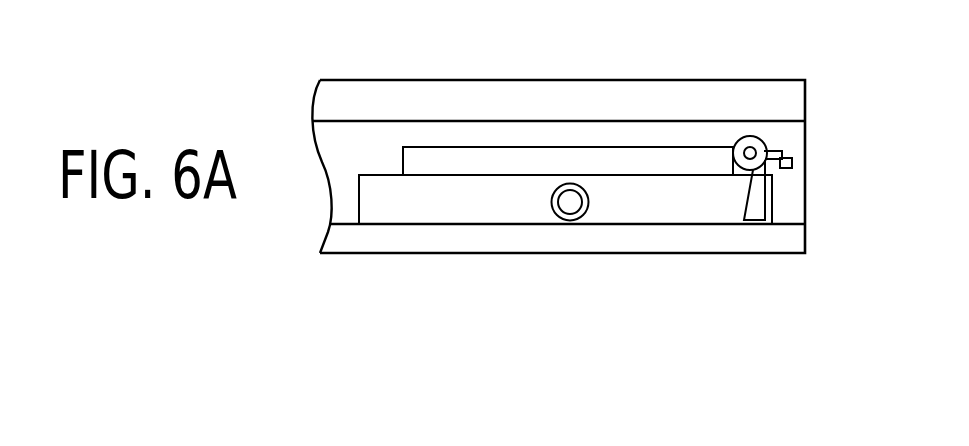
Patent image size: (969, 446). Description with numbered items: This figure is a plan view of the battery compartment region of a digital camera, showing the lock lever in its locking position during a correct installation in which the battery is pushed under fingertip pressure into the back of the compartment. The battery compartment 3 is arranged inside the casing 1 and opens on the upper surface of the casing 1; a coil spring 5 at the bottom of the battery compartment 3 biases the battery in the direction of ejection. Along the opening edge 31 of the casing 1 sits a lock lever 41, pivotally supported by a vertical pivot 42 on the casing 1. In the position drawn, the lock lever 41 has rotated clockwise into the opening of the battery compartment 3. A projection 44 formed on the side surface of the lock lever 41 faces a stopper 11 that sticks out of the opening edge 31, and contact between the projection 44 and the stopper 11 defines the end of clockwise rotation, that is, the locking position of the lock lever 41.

The casing 1 is at (633, 80).
The battery compartment 3 is at (438, 207).
The coil spring 5 is at (549, 210).
The stopper 11 is at (787, 168).
The opening edge 31 is at (506, 138).
The lock lever 41 is at (756, 210).
The pivot 42 is at (750, 147).
The projection 44 is at (773, 152).